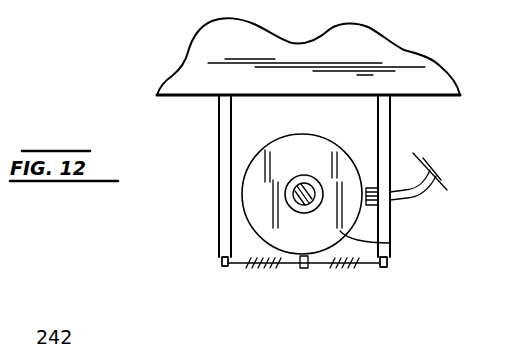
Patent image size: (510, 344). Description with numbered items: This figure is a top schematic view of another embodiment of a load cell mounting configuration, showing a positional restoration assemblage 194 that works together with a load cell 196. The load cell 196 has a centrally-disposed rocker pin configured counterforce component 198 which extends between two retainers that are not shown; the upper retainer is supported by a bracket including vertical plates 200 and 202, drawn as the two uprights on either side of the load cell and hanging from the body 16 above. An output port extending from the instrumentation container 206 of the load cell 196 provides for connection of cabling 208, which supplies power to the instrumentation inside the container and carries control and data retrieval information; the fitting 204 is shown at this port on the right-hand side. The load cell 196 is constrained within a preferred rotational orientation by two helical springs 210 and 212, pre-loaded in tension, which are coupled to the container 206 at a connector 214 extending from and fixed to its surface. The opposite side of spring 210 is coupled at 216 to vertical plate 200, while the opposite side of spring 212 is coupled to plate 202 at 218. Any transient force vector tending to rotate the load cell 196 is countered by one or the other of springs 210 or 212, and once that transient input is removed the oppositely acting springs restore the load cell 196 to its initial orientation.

The vehicle body/panel 16 is at (370, 50).
The positional restoration assemblage 194 is at (293, 277).
The load cell 196 is at (258, 219).
The rocker pin configured counterforce component 198 is at (308, 190).
The vertical plate 200 is at (218, 128).
The vertical plate 202 is at (392, 113).
The fitting 204 is at (372, 206).
The instrumentation container 206 is at (390, 243).
The cabling 208 is at (418, 192).
The helical spring 210 is at (270, 268).
The helical spring 212 is at (337, 268).
The connector 214 is at (302, 270).
The coupling point 216 is at (223, 266).
The coupling point 218 is at (386, 268).